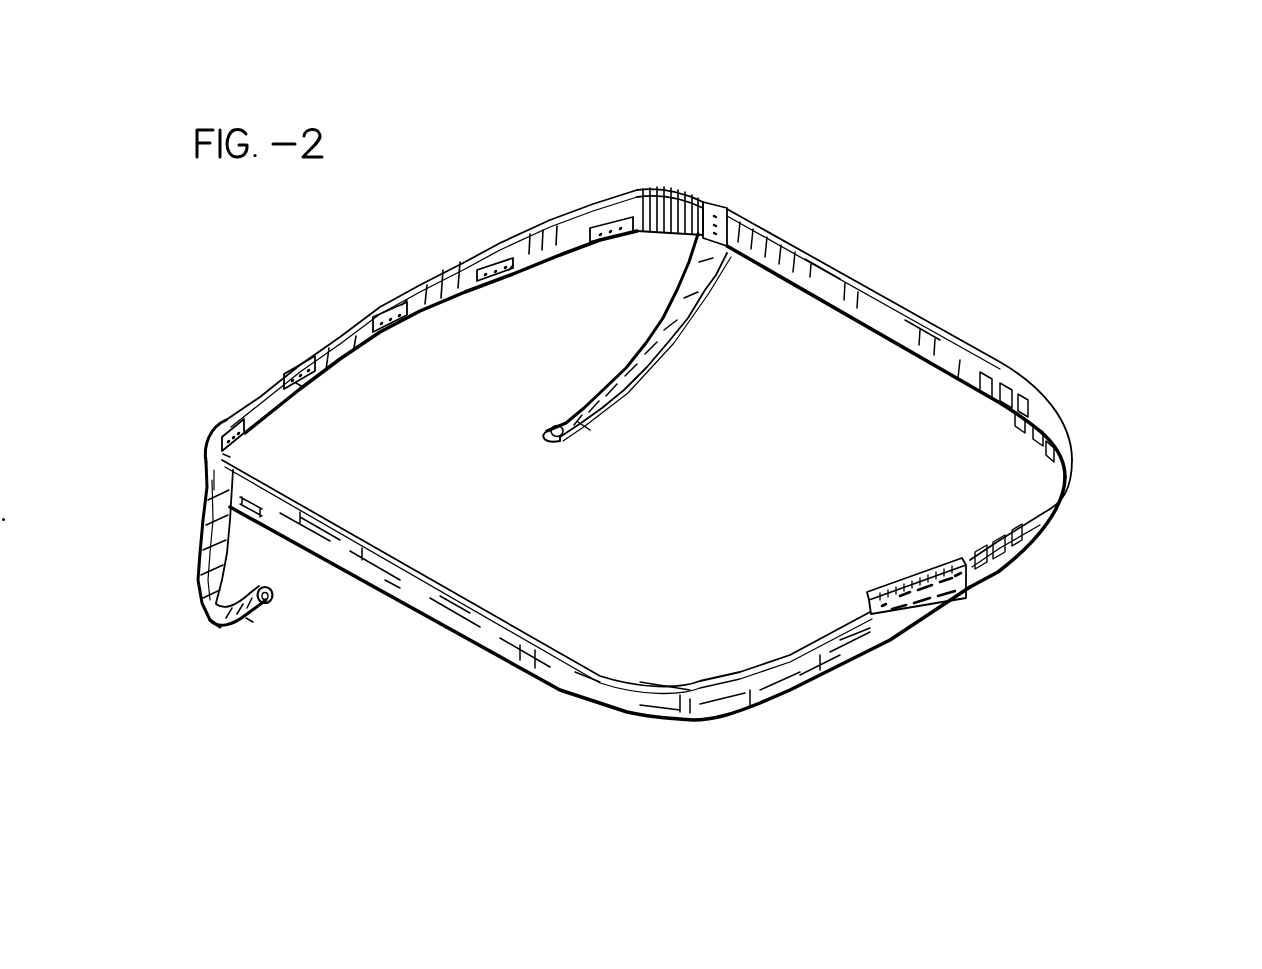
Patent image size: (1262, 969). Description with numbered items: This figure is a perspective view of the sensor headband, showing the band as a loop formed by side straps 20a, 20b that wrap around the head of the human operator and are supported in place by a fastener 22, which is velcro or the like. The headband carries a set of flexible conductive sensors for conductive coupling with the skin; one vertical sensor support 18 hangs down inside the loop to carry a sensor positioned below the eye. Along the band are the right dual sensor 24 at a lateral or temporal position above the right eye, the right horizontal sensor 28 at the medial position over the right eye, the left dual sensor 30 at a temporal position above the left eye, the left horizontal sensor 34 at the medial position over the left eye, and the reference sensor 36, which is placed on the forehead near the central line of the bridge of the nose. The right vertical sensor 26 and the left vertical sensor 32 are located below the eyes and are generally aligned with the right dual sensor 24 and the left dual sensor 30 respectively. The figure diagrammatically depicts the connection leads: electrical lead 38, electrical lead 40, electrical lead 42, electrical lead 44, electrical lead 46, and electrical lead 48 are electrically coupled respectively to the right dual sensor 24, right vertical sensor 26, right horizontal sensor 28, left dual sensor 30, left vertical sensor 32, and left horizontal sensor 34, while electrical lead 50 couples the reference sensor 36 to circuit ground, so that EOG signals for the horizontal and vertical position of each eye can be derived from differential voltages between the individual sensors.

The vertical sensor support 18 is at (640, 385).
The side strap 20a is at (1040, 392).
The side strap 20b is at (606, 677).
The fastener 22 is at (902, 574).
The right dual sensor 24 is at (603, 244).
The right vertical sensor 26 is at (548, 430).
The right horizontal sensor 28 is at (506, 278).
The left dual sensor 30 is at (228, 430).
The left vertical sensor 32 is at (267, 604).
The left horizontal sensor 34 is at (291, 376).
The reference sensor 36 is at (392, 328).
The electrical lead 38 is at (637, 200).
The electrical lead 40 is at (588, 428).
The electrical lead 42 is at (513, 265).
The electrical lead 44 is at (230, 457).
The electrical lead 46 is at (253, 622).
The electrical lead 48 is at (303, 387).
The electrical lead 50 is at (407, 300).